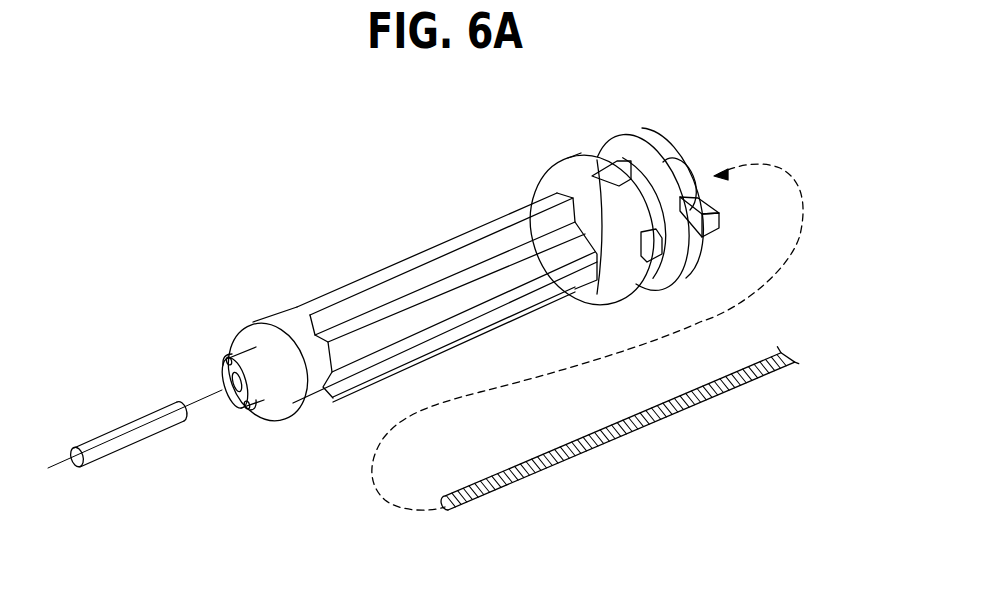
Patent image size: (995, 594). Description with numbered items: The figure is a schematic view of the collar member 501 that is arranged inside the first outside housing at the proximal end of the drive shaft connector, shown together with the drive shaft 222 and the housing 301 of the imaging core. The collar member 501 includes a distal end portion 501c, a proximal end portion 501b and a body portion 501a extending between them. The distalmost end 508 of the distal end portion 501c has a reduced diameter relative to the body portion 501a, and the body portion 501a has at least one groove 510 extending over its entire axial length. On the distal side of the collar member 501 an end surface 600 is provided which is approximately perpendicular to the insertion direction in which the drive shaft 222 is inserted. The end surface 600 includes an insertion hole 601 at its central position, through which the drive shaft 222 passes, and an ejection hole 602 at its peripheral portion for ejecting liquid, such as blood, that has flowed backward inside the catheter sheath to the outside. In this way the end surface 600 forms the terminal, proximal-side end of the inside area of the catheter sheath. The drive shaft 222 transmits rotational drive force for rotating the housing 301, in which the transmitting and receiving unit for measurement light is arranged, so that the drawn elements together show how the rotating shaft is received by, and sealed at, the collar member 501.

The drive shaft 222 is at (662, 408).
The housing 301 is at (138, 435).
The collar member 501 is at (444, 339).
The body portion 501a is at (445, 287).
The proximal end portion 501b is at (590, 168).
The distal end portion 501c is at (281, 442).
The distalmost end 508 is at (282, 387).
The groove 510 is at (478, 281).
The end surface 600 is at (234, 357).
The insertion hole 601 is at (234, 382).
The ejection hole 602 is at (228, 358).